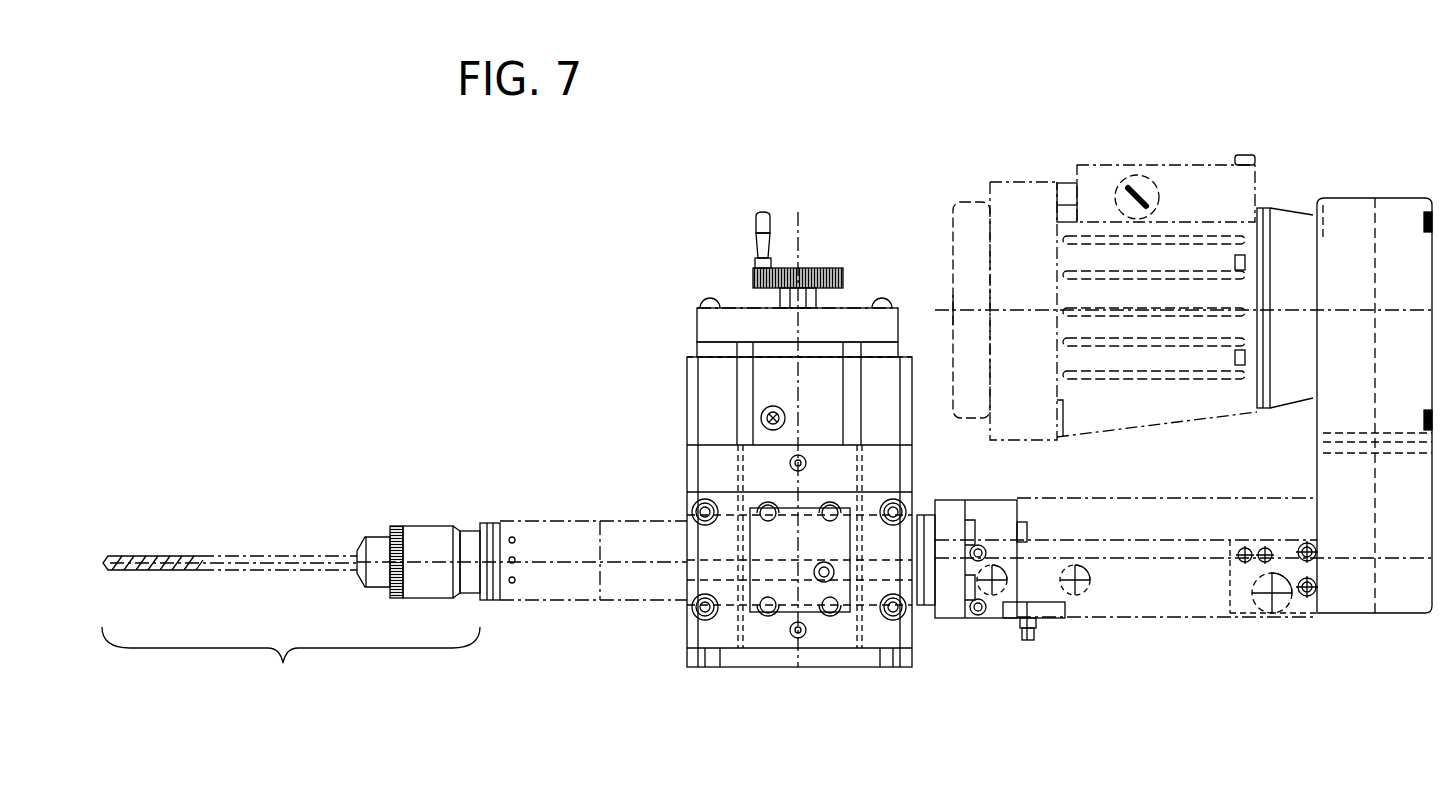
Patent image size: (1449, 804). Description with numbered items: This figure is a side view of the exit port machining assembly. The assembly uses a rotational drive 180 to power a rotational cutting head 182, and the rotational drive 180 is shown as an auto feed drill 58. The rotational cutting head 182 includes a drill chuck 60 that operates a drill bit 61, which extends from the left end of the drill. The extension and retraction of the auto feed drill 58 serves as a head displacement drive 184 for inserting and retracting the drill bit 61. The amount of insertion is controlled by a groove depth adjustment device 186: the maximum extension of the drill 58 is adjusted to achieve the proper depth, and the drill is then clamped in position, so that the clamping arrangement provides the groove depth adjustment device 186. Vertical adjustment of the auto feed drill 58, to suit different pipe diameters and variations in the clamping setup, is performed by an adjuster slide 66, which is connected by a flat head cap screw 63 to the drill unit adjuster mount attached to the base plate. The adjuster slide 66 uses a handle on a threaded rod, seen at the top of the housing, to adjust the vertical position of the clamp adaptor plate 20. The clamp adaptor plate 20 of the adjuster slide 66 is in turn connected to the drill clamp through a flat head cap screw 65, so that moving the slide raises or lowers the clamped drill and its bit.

The clamp adaptor plate 20 is at (708, 468).
The auto feed drill 58 is at (1185, 618).
The drill chuck 60 is at (417, 523).
The drill bit 61 is at (243, 553).
The flat head cap screw 63 is at (765, 405).
The flat head cap screw 65 is at (787, 470).
The adjuster slide 66 is at (848, 315).
The rotational drive 180 is at (978, 188).
The rotational cutting head 182 is at (291, 666).
The head displacement drive 184 is at (983, 635).
The groove depth adjustment device 186 is at (683, 612).